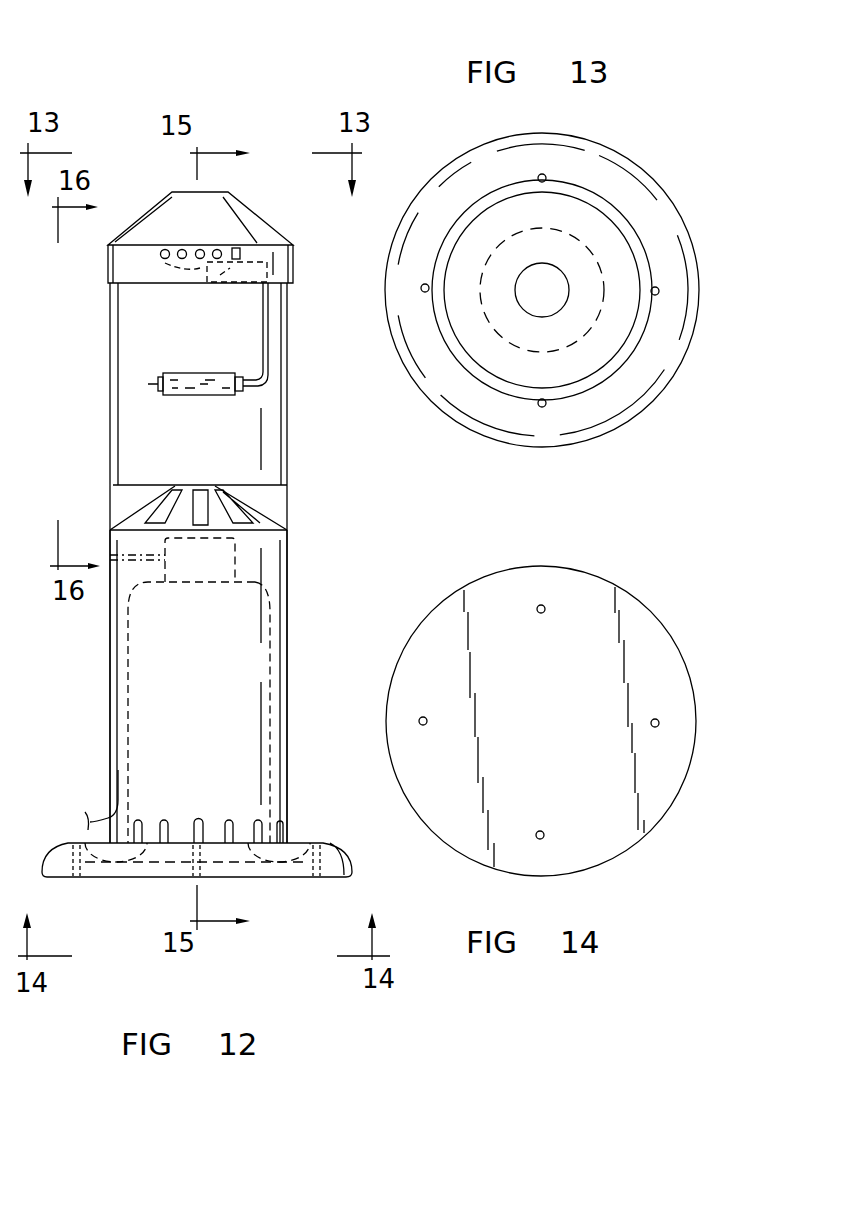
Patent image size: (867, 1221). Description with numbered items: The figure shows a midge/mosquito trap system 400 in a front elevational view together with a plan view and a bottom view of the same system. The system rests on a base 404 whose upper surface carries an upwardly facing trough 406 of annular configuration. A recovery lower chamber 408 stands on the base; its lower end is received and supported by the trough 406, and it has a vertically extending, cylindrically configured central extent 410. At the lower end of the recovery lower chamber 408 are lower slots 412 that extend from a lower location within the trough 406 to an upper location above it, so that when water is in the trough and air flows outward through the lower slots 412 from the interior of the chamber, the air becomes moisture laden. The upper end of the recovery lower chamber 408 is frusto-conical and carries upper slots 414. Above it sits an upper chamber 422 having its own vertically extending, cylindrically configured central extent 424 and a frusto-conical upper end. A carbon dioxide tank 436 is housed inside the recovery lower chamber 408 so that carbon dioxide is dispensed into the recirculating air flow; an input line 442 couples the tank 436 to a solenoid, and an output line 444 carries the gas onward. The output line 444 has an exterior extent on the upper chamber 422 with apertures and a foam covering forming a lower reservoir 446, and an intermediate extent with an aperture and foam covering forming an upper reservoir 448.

In FIG. 12, the water dispensing apparatus 400 is at (300, 513).
In FIG. 14, the base 404 is at (638, 630).
In FIG. 12, the trough 406 is at (303, 843).
In FIG. 12, the recovery lower chamber 408 is at (288, 590).
In FIG. 12, the central extent 410 is at (288, 648).
In FIG. 12, the lower slots 412 is at (165, 818).
In FIG. 12, the upper slots 414 is at (208, 513).
In FIG. 12, the upper chamber 422 is at (110, 380).
In FIG. 13, the upper chamber 422 is at (665, 205).
In FIG. 12, the central extent 424 is at (288, 415).
In FIG. 12, the carbon dioxide tank 436 is at (220, 709).
In FIG. 12, the input line 442 is at (165, 263).
In FIG. 12, the output line 444 is at (268, 338).
In FIG. 12, the lower reservoir 446 is at (190, 395).
In FIG. 12, the upper reservoir 448 is at (220, 275).